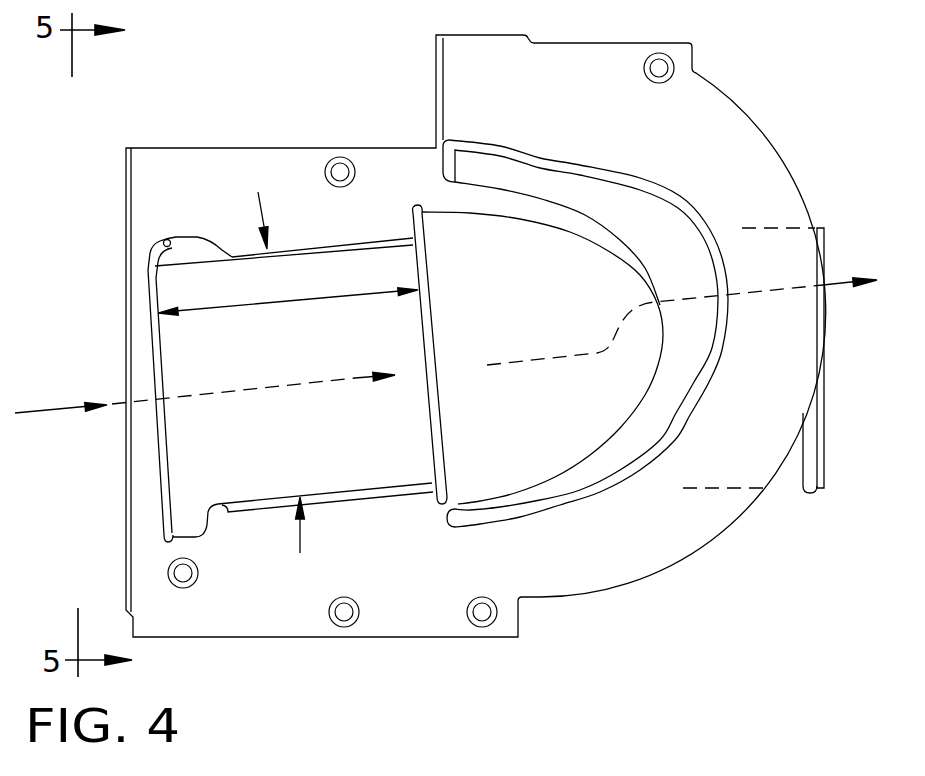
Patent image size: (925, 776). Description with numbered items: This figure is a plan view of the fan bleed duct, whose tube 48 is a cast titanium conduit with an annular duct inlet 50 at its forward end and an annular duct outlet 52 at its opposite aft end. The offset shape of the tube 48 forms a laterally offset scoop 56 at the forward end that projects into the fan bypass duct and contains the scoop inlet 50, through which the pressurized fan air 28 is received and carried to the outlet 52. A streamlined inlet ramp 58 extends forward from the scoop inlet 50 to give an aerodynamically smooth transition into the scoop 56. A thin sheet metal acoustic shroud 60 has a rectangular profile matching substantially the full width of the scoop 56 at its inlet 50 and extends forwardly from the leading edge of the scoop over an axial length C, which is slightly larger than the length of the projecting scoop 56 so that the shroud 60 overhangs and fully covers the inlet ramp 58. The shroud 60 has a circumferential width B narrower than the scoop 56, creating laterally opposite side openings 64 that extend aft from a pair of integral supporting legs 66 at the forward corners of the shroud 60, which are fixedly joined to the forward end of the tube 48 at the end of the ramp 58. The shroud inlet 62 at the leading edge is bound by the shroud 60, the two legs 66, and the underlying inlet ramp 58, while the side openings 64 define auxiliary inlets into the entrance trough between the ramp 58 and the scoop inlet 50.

The pressurized fan air 28 is at (42, 395).
The tube 48 is at (779, 490).
The duct inlet 50 is at (428, 500).
The duct outlet 52 is at (826, 467).
The scoop 56 is at (546, 306).
The inlet ramp 58 is at (126, 244).
The shroud 60 is at (323, 450).
The shroud inlet 62 is at (163, 438).
The side openings 64 is at (233, 512).
The supporting legs 66 is at (182, 532).
The circumferential width B is at (303, 527).
The axial length C is at (263, 303).